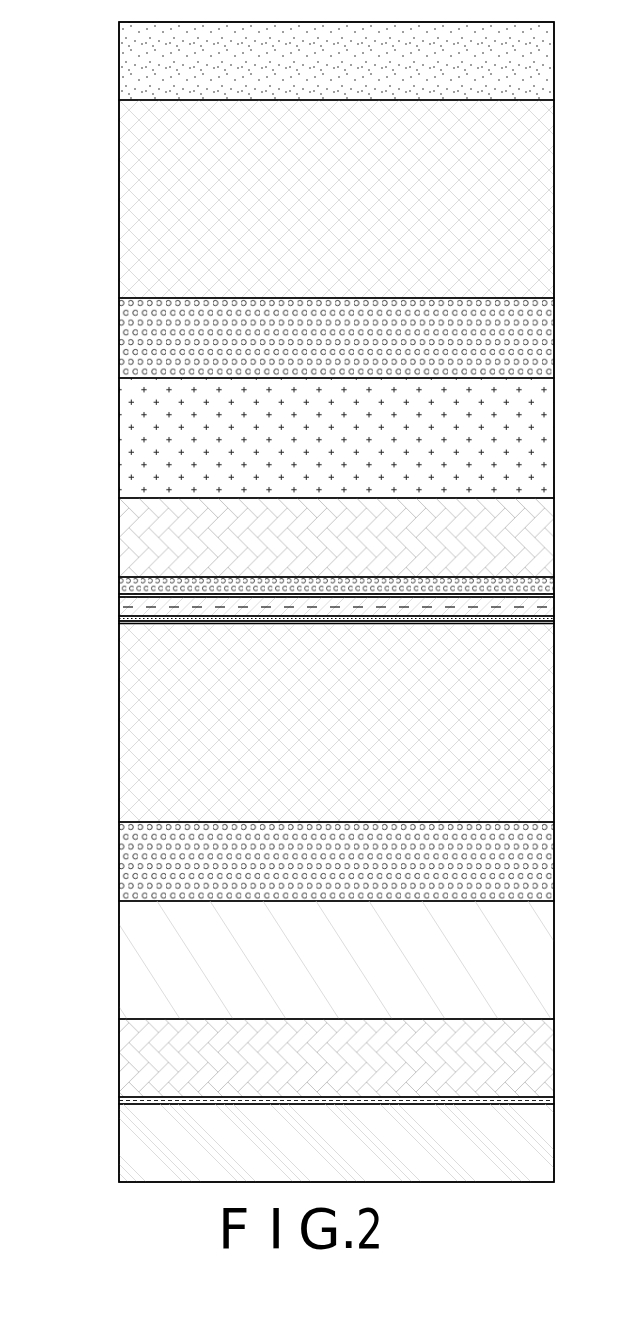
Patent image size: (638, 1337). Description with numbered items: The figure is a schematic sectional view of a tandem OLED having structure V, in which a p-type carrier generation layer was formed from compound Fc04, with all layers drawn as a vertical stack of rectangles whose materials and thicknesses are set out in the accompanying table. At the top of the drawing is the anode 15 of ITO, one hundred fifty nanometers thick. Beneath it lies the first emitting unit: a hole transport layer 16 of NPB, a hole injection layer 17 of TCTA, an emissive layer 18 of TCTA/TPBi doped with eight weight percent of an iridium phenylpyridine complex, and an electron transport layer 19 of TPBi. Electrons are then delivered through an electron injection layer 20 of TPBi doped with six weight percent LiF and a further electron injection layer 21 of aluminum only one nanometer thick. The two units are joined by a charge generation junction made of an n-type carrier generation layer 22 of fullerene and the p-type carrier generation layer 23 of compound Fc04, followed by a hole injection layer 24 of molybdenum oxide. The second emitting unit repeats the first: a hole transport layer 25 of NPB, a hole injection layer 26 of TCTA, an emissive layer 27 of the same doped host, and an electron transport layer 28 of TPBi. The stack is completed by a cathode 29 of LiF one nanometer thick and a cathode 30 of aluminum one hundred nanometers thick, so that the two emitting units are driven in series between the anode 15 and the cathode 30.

The anode 15 is at (130, 66).
The hole transport layer 16 is at (130, 222).
The hole injection layer 17 is at (128, 347).
The emissive layer 18 is at (128, 444).
The electron transport layer 19 is at (123, 542).
The electron injection layer 20 is at (124, 588).
The electron injection layer 21 is at (123, 596).
The n-type carrier generation layer 22 is at (123, 609).
The p-type carrier generation layer 23 is at (123, 618).
The hole injection layer 24 is at (123, 622).
The hole transport layer 25 is at (128, 715).
The hole injection layer 26 is at (128, 858).
The emissive layer 27 is at (128, 948).
The electron transport layer 28 is at (128, 1060).
The cathode 29 is at (128, 1100).
The cathode 30 is at (124, 1145).